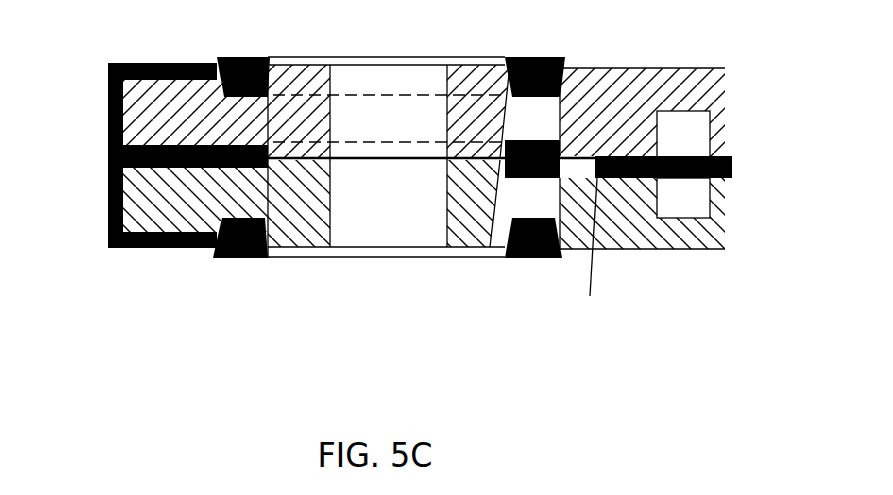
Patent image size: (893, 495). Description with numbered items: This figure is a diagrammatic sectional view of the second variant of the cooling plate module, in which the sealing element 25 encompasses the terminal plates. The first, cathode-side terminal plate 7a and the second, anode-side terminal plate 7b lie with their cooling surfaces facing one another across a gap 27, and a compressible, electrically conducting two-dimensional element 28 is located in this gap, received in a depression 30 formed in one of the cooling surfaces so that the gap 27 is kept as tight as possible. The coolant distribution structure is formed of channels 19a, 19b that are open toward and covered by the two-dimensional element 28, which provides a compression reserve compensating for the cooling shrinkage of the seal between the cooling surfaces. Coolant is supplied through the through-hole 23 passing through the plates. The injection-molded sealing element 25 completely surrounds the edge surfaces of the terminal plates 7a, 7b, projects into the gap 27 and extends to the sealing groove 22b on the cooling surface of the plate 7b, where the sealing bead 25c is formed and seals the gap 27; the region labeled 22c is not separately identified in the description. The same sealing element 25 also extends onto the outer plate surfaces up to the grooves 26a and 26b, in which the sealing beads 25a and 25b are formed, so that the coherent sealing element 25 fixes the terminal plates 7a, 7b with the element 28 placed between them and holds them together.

The sealing element 25 is at (108, 182).
The sealing bead 25a is at (240, 57).
The sealing bead 25b is at (225, 258).
The sealing bead 25c is at (272, 260).
The through-hole 23 is at (345, 232).
The gap 27 is at (447, 160).
The sealing groove 22b is at (490, 247).
The upper element portion 22c is at (507, 62).
The sealing groove 26a is at (578, 67).
The sealing groove 26b is at (561, 258).
The terminal plate 7a is at (725, 105).
The terminal plate 7b is at (715, 235).
The coolant distribution structure 19a is at (705, 132).
The coolant distribution structure 19b is at (697, 202).
The compressible two-dimensional element 28 is at (735, 167).
The depression 30 is at (593, 252).